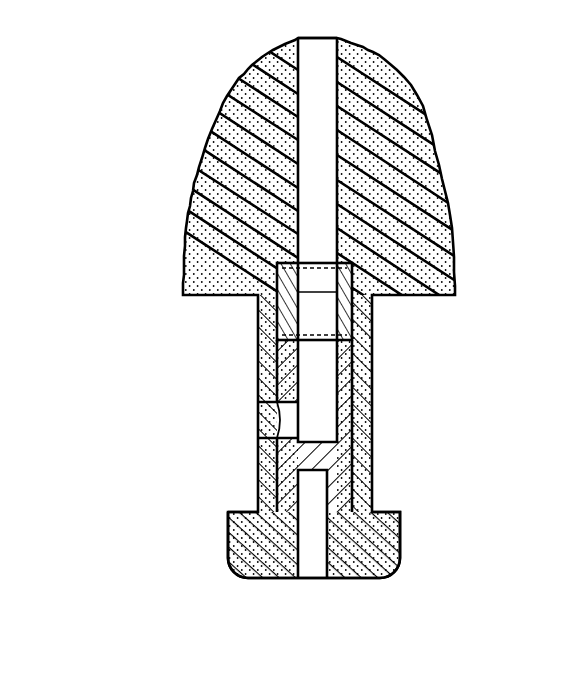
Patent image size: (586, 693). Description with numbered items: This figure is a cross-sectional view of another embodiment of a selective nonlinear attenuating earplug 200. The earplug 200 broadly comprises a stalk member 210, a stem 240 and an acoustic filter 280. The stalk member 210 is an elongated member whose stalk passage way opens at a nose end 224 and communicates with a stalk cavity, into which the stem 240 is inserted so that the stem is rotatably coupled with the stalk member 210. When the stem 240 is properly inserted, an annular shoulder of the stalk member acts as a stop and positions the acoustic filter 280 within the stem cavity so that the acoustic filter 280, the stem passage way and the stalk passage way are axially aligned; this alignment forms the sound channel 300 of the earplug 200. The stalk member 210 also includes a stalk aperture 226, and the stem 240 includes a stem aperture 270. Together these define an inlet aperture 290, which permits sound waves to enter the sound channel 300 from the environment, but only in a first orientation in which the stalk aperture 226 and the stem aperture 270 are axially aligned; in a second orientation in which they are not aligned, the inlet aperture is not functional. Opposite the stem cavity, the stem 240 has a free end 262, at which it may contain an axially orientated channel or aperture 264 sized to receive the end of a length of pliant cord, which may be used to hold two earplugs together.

The selective attenuation earplug 200 is at (110, 220).
The stalk member 210 is at (462, 259).
The nose end 224 is at (340, 38).
The sound channel 300 is at (316, 50).
The acoustic filter 280 is at (270, 325).
The stalk aperture 226 is at (260, 411).
The inlet aperture 290 is at (252, 429).
The stem aperture 270 is at (275, 437).
The stem 240 is at (220, 566).
The free end 262 is at (365, 576).
The axially orientated channel or aperture 264 is at (305, 550).